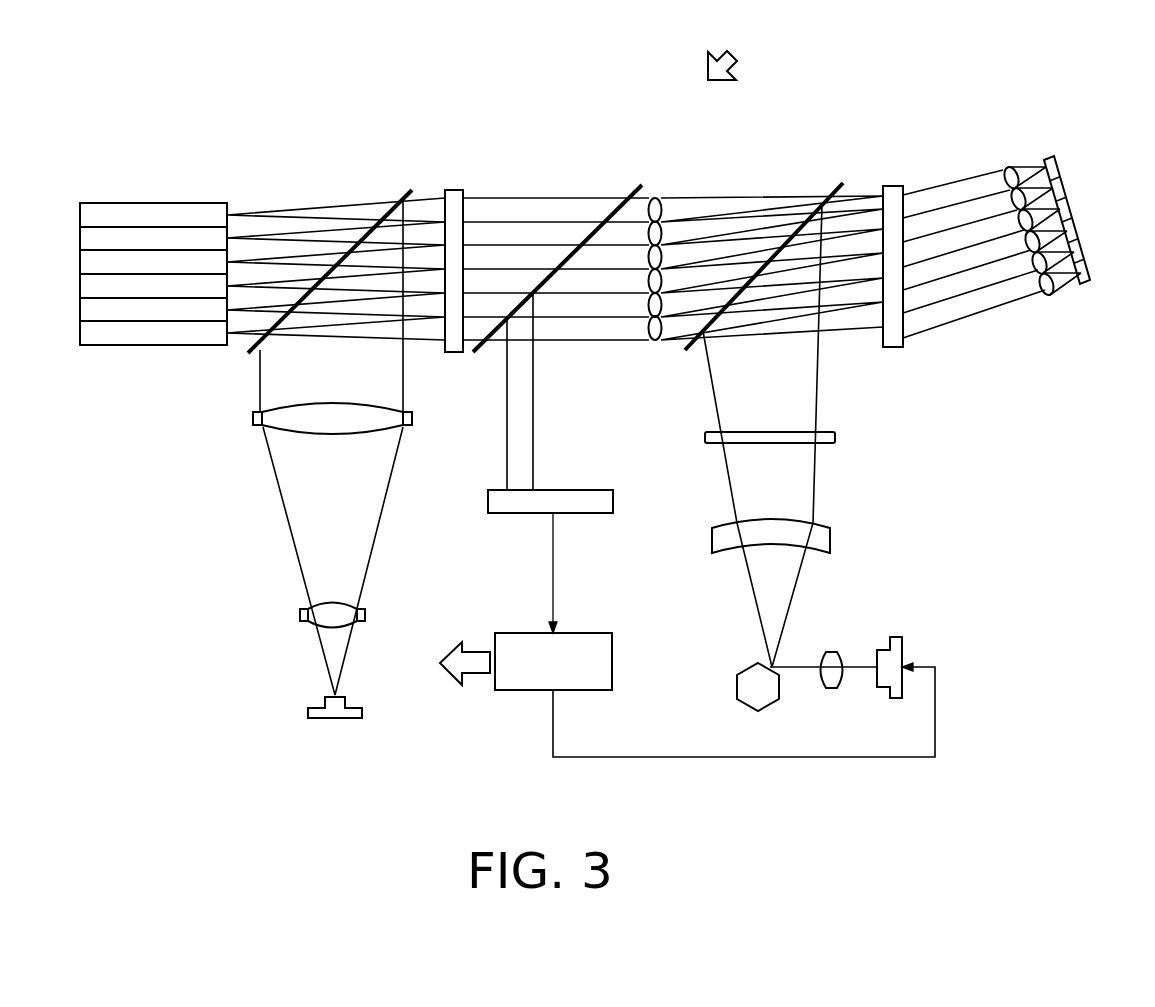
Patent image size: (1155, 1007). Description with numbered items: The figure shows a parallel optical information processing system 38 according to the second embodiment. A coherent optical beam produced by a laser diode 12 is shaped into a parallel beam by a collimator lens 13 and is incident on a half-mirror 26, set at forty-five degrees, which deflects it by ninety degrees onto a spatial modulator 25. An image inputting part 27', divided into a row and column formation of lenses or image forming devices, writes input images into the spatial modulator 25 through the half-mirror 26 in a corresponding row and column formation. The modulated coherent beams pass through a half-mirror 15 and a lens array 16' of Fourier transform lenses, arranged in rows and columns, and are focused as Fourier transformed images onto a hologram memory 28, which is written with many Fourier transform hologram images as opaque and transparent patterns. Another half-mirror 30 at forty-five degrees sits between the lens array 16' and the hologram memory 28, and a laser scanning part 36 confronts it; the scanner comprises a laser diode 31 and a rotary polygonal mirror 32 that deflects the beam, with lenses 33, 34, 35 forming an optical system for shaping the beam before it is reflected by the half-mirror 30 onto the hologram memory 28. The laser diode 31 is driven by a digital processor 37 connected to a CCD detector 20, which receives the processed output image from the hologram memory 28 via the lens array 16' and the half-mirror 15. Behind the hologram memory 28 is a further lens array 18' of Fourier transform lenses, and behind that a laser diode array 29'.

The image inputting part 27' is at (153, 230).
The half-mirror 26 is at (408, 192).
The spatial modulator 25 is at (452, 190).
The half-mirror 15 is at (630, 188).
The lens array 16' is at (692, 227).
The half-mirror 30 is at (838, 190).
The hologram memory 28 is at (895, 186).
The lens array 18' is at (1020, 192).
The laser diode array 29' is at (1070, 185).
The parallel optical information processing system 38 is at (745, 51).
The collimator lens 13 is at (253, 418).
The laser diode 12 is at (308, 712).
The CCD detector 20 is at (490, 500).
The digital processor 37 is at (498, 690).
The lens 35 is at (705, 437).
The lens 34 is at (712, 535).
The lens 33 is at (831, 652).
The laser diode 31 is at (896, 637).
The rotary polygonal mirror 32 is at (737, 690).
The laser scanning part 36 is at (892, 531).